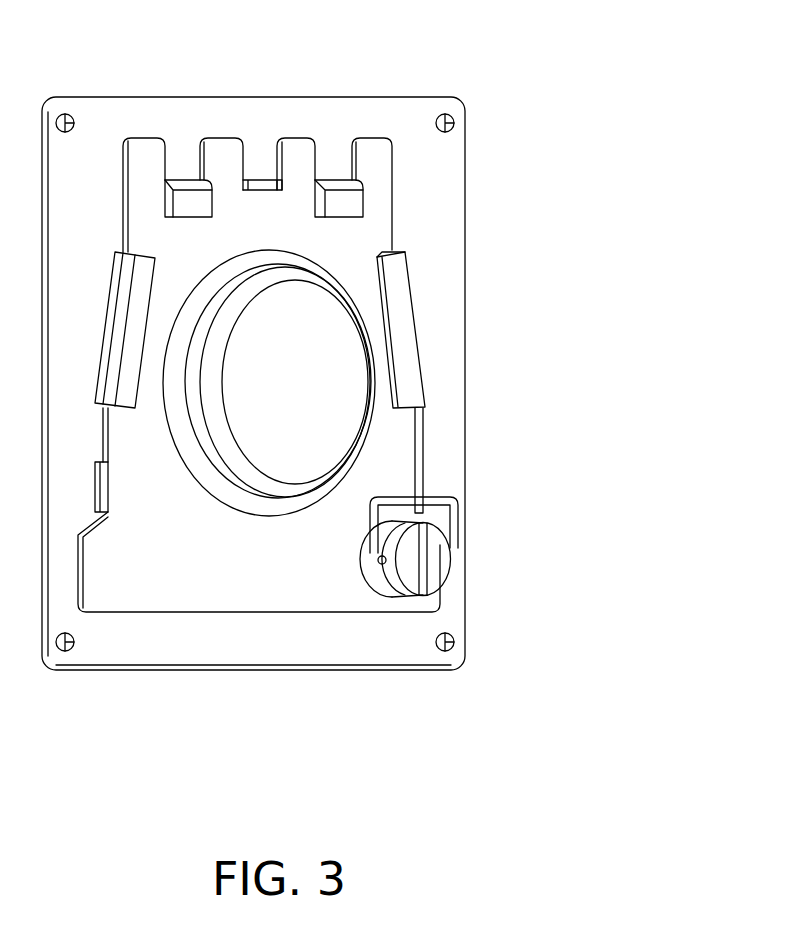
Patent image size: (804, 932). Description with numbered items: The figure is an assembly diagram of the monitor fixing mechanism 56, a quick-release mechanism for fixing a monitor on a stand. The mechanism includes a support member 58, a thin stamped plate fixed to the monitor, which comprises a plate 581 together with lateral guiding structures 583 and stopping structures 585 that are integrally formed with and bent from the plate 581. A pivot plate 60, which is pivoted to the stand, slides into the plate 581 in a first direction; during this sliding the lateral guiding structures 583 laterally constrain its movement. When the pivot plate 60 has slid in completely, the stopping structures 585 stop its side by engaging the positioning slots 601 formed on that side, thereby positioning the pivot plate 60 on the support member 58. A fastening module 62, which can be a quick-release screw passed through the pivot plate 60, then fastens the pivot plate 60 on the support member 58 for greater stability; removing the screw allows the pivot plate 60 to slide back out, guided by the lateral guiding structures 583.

The monitor fixing mechanism 56 is at (371, 372).
The support member 58 is at (367, 264).
The plate 581 is at (453, 392).
The lateral guiding structure 583 is at (403, 322).
The stopping structure 585 is at (358, 203).
The pivot plate 60 is at (313, 598).
The positioning slot 601 is at (192, 133).
The fastening module 62 is at (499, 565).